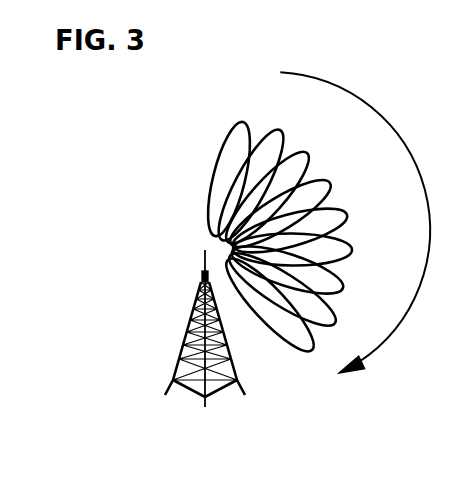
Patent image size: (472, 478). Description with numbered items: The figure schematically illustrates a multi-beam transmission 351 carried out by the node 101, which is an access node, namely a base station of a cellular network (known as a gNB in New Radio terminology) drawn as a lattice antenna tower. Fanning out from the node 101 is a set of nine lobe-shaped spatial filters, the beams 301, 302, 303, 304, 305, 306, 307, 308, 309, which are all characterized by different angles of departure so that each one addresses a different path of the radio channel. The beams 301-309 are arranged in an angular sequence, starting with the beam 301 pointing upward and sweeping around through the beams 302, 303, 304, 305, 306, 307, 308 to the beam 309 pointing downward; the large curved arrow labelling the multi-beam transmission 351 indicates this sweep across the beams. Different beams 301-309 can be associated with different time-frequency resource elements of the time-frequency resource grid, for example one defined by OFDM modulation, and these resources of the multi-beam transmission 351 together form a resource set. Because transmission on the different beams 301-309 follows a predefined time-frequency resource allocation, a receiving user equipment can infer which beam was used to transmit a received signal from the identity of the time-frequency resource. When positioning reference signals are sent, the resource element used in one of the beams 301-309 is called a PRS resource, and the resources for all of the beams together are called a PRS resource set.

The node 101 is at (205, 409).
The beam 301 is at (241, 119).
The beam 302 is at (266, 130).
The beam 303 is at (297, 152).
The beam 304 is at (323, 176).
The beam 305 is at (343, 207).
The beam 306 is at (350, 259).
The beam 307 is at (343, 297).
The beam 308 is at (327, 330).
The beam 309 is at (297, 345).
The multi-beam transmission 351 is at (352, 87).